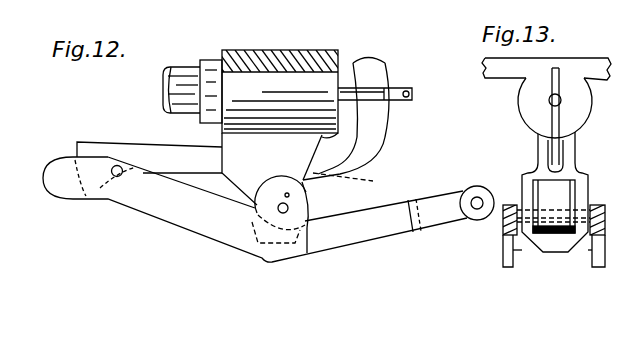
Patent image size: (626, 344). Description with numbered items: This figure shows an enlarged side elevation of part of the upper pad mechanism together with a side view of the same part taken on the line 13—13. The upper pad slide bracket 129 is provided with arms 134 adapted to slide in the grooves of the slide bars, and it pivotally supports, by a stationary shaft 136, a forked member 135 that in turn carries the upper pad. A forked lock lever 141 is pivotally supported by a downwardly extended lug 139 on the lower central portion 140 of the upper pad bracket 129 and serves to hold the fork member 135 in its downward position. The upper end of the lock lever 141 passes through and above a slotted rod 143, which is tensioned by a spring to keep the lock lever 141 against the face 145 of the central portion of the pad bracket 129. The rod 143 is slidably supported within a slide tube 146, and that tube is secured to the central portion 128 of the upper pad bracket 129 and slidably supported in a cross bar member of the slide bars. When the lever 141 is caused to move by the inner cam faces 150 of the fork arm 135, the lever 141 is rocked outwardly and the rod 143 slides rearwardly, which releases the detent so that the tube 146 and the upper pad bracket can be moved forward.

In FIG. 12, the section line 13— 13 is at (402, 62).
In FIG. 12, the central portion of the upper pad bracket 128 is at (282, 50).
In FIG. 13, the central portion of the upper pad bracket 128 is at (561, 59).
In FIG. 12, the upper pad slide bracket 129 is at (148, 169).
In FIG. 13, the arms 134 is at (481, 96).
In FIG. 12, the forked member 135 is at (192, 224).
In FIG. 13, the forked member 135 is at (503, 229).
In FIG. 12, the stationary shaft 136 is at (116, 178).
In FIG. 12, the downwardly extended lug 139 is at (262, 203).
In FIG. 12, the lower central portion of the upper pad bracket 140 is at (272, 169).
In FIG. 13, the lower central portion of the upper pad bracket 140 is at (538, 150).
In FIG. 12, the forked lock lever 141 is at (377, 177).
In FIG. 13, the forked lock lever 141 is at (549, 126).
In FIG. 12, the slotted rod 143 is at (347, 87).
In FIG. 13, the slotted rod 143 is at (548, 103).
In FIG. 12, the face of the central portion of the pad bracket 145 is at (337, 119).
In FIG. 13, the face of the central portion of the pad bracket 145 is at (573, 116).
In FIG. 12, the slide tube 146 is at (183, 67).
In FIG. 12, the inner cam faces 150 is at (302, 230).
In FIG. 13, the inner cam faces 150 is at (560, 251).